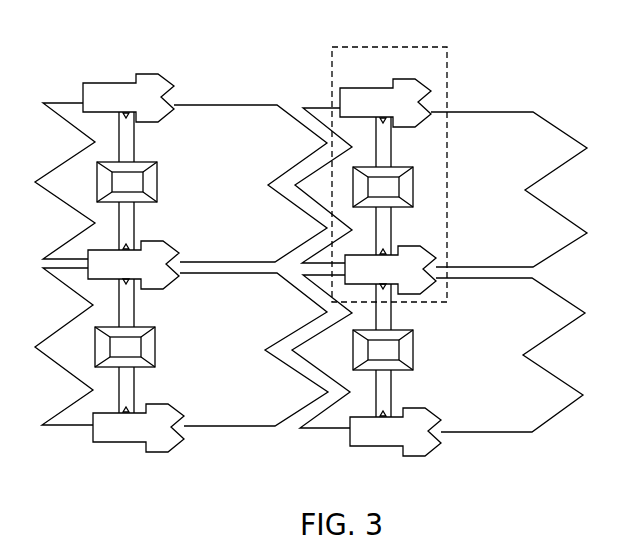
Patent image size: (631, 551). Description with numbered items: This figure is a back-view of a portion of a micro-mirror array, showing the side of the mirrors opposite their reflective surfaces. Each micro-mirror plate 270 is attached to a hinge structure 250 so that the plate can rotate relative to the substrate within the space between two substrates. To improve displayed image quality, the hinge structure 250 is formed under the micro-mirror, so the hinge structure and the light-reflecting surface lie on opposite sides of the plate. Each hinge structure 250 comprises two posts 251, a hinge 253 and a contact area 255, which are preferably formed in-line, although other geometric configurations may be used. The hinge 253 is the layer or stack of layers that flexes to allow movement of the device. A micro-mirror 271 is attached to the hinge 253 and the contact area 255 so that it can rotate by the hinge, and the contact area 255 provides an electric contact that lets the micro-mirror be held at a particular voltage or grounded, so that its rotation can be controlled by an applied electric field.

The hinge structure 250 is at (445, 162).
The post 251 is at (241, 251).
The hinge 253 is at (255, 264).
The contact area 255 is at (254, 266).
The micro-mirror plate 270 is at (250, 167).
The micro-mirror 271 is at (254, 377).